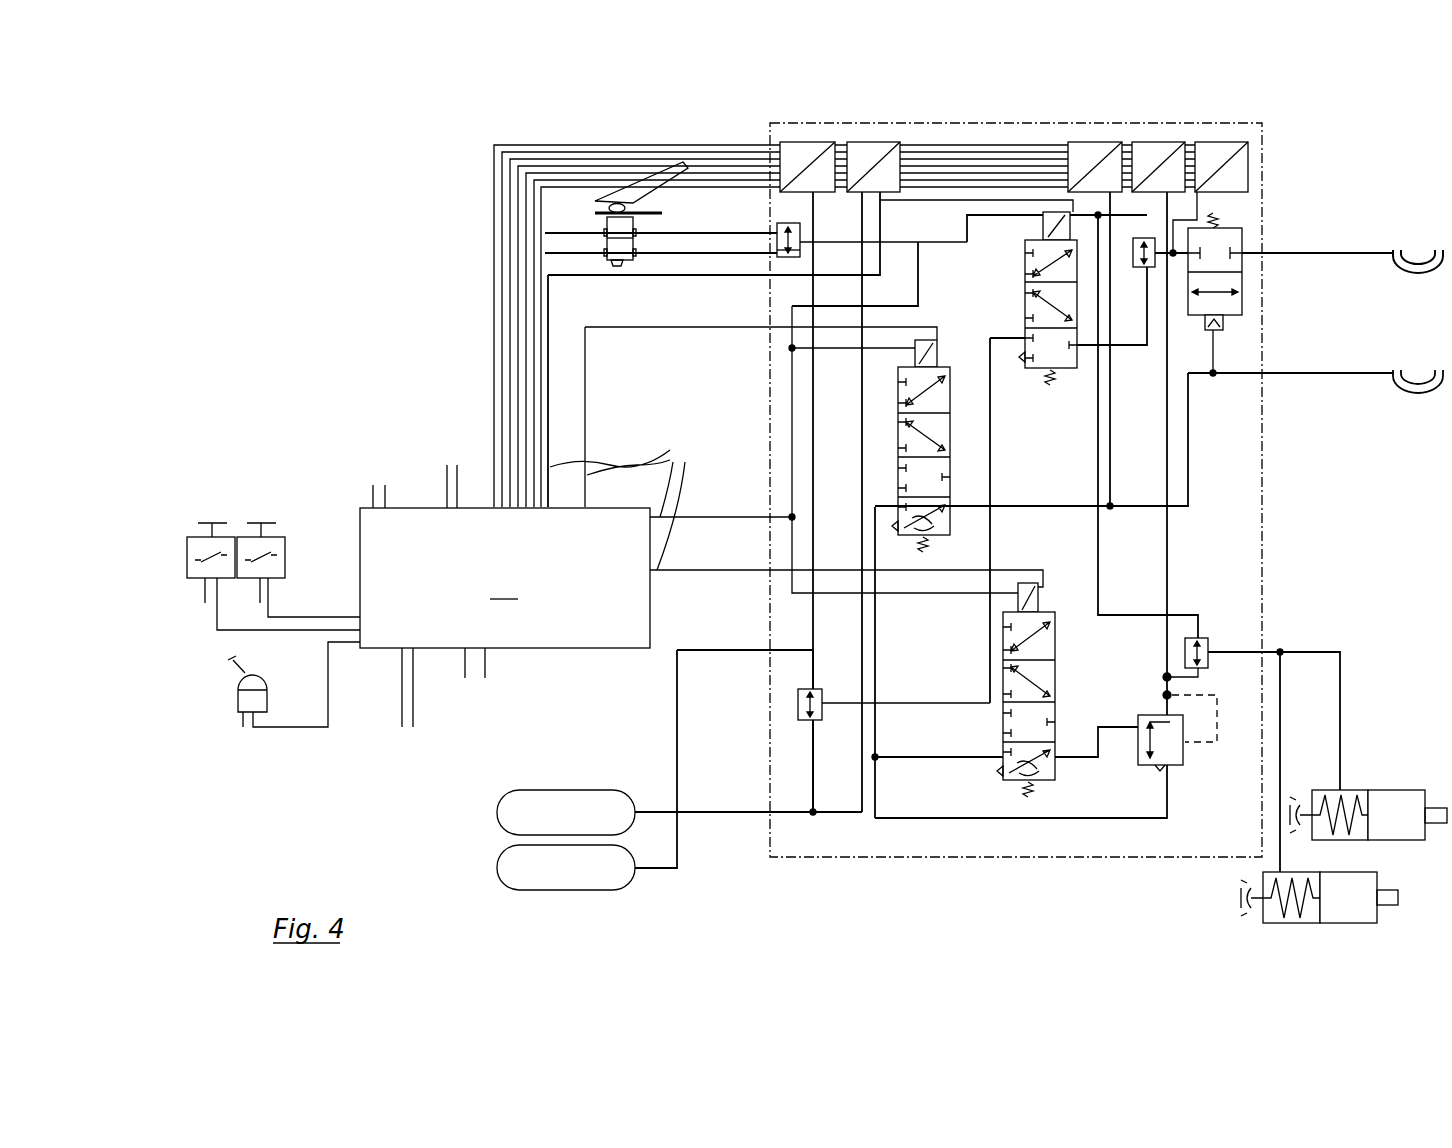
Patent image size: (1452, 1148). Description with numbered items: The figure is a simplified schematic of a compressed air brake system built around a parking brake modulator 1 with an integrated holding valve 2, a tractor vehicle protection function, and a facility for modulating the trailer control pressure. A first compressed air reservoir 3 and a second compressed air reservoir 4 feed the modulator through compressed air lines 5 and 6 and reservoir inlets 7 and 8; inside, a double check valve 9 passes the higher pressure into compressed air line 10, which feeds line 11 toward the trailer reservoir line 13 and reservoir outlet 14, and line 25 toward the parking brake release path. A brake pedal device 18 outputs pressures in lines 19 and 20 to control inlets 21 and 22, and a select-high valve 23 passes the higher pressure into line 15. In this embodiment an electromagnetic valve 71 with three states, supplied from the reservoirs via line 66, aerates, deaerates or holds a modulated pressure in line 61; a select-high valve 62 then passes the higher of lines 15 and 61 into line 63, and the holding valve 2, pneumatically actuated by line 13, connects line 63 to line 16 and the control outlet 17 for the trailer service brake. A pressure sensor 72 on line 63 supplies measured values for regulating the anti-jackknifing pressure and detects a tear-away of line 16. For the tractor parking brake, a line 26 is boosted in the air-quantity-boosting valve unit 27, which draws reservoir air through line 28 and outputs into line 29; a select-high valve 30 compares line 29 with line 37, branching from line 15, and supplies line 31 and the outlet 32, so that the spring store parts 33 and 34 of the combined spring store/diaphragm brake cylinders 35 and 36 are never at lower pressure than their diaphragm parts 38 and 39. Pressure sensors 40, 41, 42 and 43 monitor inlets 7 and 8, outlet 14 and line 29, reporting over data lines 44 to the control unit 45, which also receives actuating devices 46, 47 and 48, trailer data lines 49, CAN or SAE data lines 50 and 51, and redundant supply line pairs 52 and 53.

The parking brake modulator 1 is at (1262, 493).
The holding valve 2 is at (1246, 314).
The first compressed air reservoir 3 is at (500, 880).
The second compressed air reservoir 4 is at (494, 819).
The compressed air line 5 is at (807, 686).
The compressed air line 6 is at (810, 784).
The compressed air reservoir inlet 7 is at (768, 648).
The compressed air reservoir inlet 8 is at (771, 816).
The double check valve 9 is at (821, 718).
The compressed air line 10 is at (828, 705).
The compressed air line 11 is at (876, 624).
The compressed air line 13 is at (1188, 446).
The compressed air reservoir outlet 14 is at (1262, 379).
The compressed air line 15 is at (927, 242).
The compressed air line 16 is at (1314, 252).
The compressed air control outlet 17 is at (1262, 256).
The brake pedal device 18 is at (601, 206).
The compressed air line 19 is at (680, 233).
The compressed air line 20 is at (674, 255).
The compressed air control inlet 21 is at (774, 232).
The compressed air control inlet 22 is at (771, 256).
The select-high valve 23 is at (802, 240).
The compressed air line 25 is at (868, 755).
The compressed air line 26 is at (1114, 726).
The air-quantity-boosting valve unit 27 is at (1184, 759).
The compressed air line 28 is at (1096, 818).
The compressed air line 29 is at (1159, 700).
The select-high valve 30 is at (1210, 638).
The compressed air line 31 is at (1234, 651).
The compressed air outlet 32 is at (1270, 655).
The spring store part 33 is at (1352, 792).
The spring store part 34 is at (1288, 875).
The combined spring store/diaphragm brake cylinder 35 is at (1368, 816).
The combined spring store/diaphragm brake cylinder 36 is at (1332, 885).
The compressed air line 37 is at (1099, 547).
The diaphragm part 38 is at (1400, 792).
The diaphragm part 39 is at (1346, 875).
The pressure sensor 40 is at (812, 142).
The pressure sensor 41 is at (891, 142).
The pressure sensor 42 is at (1101, 142).
The pressure sensor 43 is at (1172, 142).
The data lines 44 is at (542, 399).
The control unit 45 is at (505, 578).
The actuating device 46 is at (190, 568).
The actuating device 47 is at (285, 570).
The actuating device 48 is at (257, 679).
The data lines 49 is at (446, 476).
The data lines 50 is at (488, 665).
The data lines 51 is at (563, 697).
The electrical line pair 52 is at (413, 700).
The electrical line pair 53 is at (385, 485).
The compressed air line 61 is at (1141, 352).
The select-high valve 62 is at (1140, 269).
The compressed air line 63 is at (1176, 256).
The compressed air line 66 is at (992, 430).
The electromagnetic valve 71 is at (1058, 370).
The pressure sensor 72 is at (1248, 158).